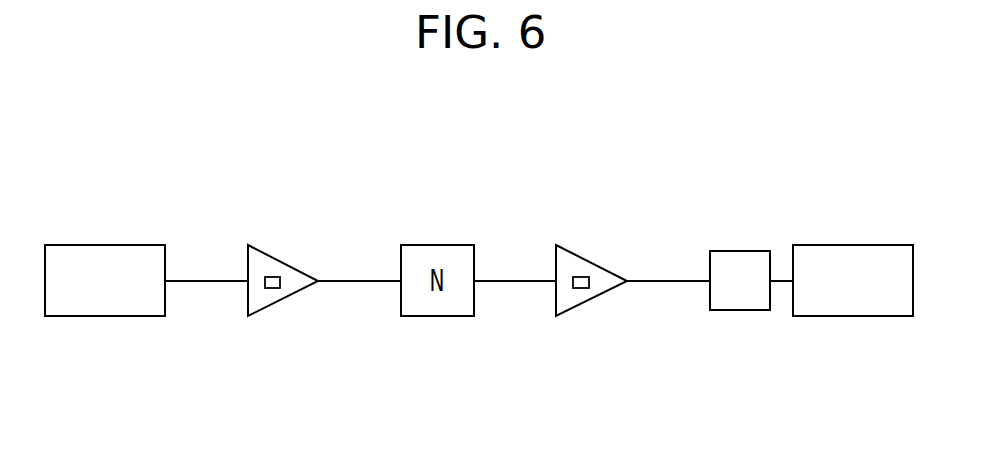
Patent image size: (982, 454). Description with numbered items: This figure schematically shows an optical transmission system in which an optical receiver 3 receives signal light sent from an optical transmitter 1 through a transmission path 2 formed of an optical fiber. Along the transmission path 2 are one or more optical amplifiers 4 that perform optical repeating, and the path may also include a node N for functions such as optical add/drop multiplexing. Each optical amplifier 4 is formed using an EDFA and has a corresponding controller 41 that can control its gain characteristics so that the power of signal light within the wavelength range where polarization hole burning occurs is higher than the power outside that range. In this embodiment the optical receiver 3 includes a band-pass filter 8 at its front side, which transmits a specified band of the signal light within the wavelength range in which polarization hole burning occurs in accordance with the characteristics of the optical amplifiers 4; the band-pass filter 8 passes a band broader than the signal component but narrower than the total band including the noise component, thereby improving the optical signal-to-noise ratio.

The optical transmitter 1 is at (107, 245).
The transmission path 2 is at (366, 279).
The optical receiver 3 is at (842, 245).
The optical amplifier 4 is at (280, 257).
The controller 41 is at (273, 290).
The band-pass filter 8 is at (742, 251).